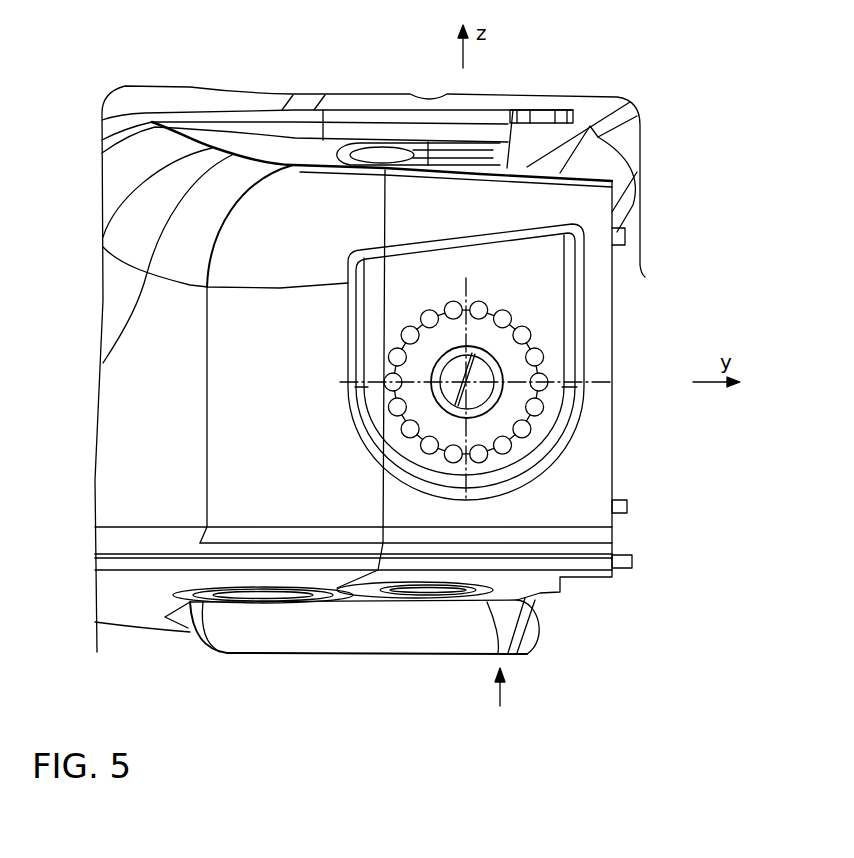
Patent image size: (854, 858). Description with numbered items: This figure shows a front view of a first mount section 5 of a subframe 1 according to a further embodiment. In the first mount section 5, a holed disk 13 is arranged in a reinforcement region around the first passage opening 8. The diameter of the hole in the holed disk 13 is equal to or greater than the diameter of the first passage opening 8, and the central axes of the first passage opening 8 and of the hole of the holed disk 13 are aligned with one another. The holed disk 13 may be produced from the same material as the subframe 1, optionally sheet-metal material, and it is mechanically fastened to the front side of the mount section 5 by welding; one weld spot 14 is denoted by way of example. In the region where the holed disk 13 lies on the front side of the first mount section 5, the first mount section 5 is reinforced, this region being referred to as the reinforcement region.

The subframe 1 is at (135, 476).
The first passage opening 8 is at (480, 370).
The holed disk 13 is at (482, 327).
The weld spot 14 is at (515, 432).
The first mount section 5 is at (501, 701).